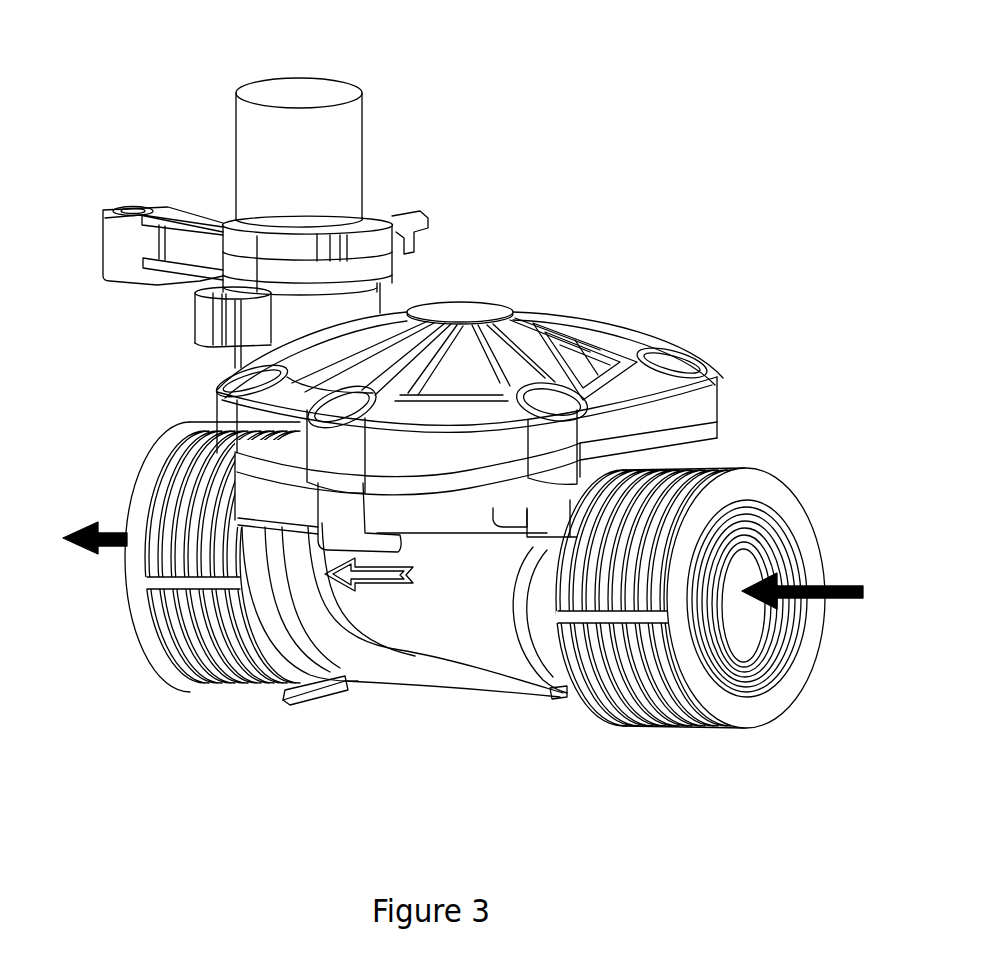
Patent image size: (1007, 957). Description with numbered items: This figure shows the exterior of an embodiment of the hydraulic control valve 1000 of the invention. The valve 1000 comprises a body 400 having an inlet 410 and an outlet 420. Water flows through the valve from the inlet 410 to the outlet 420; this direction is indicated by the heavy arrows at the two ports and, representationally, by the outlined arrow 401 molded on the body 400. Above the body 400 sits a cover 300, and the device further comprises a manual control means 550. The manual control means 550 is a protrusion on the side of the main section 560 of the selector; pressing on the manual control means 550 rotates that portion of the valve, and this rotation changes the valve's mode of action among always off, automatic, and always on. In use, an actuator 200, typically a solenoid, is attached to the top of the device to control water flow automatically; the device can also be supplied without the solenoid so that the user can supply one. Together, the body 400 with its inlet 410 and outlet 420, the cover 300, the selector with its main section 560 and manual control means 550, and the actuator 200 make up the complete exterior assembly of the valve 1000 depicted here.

The valve 1000 is at (474, 103).
The actuator 200 is at (289, 88).
The cover 300 is at (481, 300).
The body 400 is at (429, 636).
The outlined arrow 401 is at (356, 583).
The inlet 410 is at (737, 699).
The outlet 420 is at (170, 668).
The manual control means 550 is at (184, 208).
The main section 560 is at (232, 274).